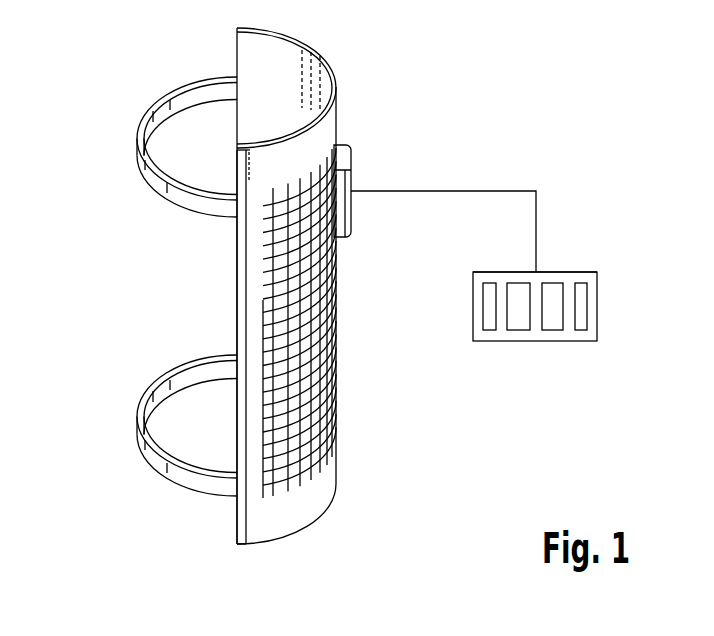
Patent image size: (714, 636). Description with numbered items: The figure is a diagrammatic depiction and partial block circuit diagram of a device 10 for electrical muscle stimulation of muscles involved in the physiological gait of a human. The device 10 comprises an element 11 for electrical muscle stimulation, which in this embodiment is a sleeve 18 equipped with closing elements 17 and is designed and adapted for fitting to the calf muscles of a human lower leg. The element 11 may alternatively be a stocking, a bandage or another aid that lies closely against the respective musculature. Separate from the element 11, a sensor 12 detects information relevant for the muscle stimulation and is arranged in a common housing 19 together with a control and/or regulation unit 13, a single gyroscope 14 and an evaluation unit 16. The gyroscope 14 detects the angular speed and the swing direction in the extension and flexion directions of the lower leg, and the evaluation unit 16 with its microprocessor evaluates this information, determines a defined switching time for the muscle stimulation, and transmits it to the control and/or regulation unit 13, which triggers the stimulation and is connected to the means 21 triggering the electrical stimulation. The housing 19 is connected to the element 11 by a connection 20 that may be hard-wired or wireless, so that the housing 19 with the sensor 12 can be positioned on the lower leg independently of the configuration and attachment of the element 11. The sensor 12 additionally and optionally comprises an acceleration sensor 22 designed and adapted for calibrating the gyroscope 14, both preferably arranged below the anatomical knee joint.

The device 10 is at (108, 213).
The element for electrical muscle stimulation 11 is at (307, 152).
The sensor 12 is at (480, 342).
The control and/or regulation unit 13 is at (552, 330).
The gyroscope 14 is at (588, 305).
The evaluation unit 16 is at (518, 330).
The closing elements 17 is at (133, 127).
The sleeve 18 is at (245, 257).
The housing 19 is at (598, 278).
The connection 20 is at (410, 191).
The means triggering the electrical stimulation 21 is at (278, 298).
The acceleration sensor 22 is at (483, 305).